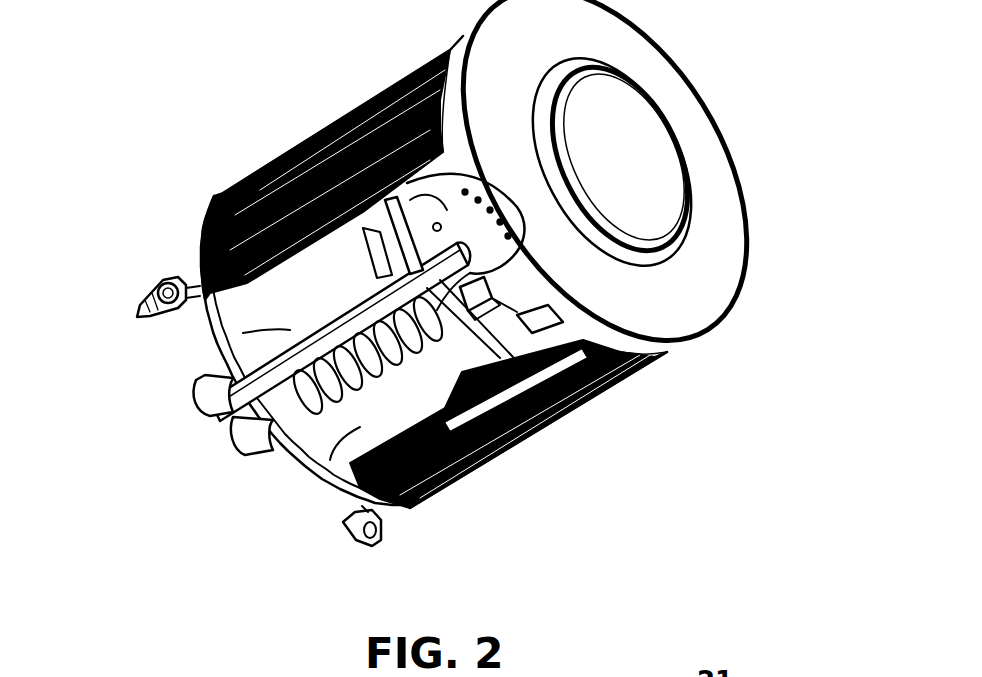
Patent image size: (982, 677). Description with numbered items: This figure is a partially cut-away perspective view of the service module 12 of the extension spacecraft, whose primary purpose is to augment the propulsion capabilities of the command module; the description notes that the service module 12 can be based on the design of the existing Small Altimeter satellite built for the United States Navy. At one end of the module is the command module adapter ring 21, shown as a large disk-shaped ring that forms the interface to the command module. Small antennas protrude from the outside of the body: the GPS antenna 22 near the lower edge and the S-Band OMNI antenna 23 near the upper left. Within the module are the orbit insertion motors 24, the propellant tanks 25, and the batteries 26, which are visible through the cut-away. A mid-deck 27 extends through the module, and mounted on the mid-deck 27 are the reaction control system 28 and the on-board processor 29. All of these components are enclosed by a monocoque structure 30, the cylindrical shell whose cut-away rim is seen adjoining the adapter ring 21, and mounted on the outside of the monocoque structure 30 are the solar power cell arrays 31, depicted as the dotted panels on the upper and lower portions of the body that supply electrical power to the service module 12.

The service module 12 is at (645, 458).
The command module adapter ring 21 is at (717, 230).
The GPS antenna 22 is at (373, 533).
The S-Band OMNI antenna 23 is at (140, 313).
The orbit insertion motors 24 is at (203, 392).
The propellant tanks 25 is at (290, 330).
The batteries 26 is at (247, 437).
The mid-deck 27 is at (420, 198).
The reaction control system 28 is at (487, 263).
The on-board processor 29 is at (560, 320).
The monocoque structure 30 is at (655, 342).
The solar power cell arrays 31 is at (262, 172).